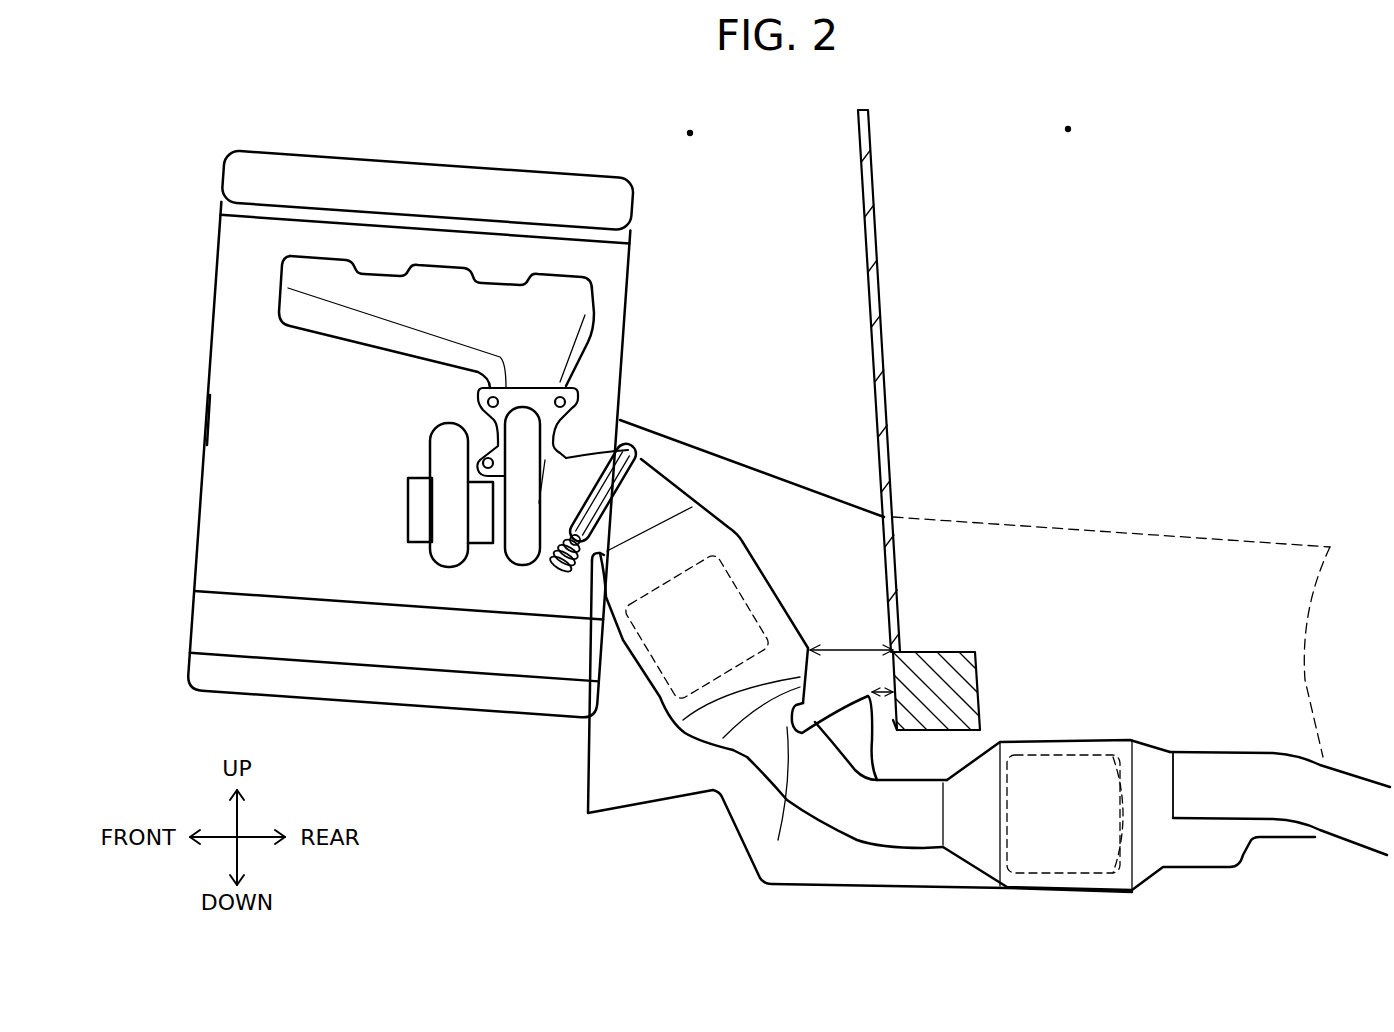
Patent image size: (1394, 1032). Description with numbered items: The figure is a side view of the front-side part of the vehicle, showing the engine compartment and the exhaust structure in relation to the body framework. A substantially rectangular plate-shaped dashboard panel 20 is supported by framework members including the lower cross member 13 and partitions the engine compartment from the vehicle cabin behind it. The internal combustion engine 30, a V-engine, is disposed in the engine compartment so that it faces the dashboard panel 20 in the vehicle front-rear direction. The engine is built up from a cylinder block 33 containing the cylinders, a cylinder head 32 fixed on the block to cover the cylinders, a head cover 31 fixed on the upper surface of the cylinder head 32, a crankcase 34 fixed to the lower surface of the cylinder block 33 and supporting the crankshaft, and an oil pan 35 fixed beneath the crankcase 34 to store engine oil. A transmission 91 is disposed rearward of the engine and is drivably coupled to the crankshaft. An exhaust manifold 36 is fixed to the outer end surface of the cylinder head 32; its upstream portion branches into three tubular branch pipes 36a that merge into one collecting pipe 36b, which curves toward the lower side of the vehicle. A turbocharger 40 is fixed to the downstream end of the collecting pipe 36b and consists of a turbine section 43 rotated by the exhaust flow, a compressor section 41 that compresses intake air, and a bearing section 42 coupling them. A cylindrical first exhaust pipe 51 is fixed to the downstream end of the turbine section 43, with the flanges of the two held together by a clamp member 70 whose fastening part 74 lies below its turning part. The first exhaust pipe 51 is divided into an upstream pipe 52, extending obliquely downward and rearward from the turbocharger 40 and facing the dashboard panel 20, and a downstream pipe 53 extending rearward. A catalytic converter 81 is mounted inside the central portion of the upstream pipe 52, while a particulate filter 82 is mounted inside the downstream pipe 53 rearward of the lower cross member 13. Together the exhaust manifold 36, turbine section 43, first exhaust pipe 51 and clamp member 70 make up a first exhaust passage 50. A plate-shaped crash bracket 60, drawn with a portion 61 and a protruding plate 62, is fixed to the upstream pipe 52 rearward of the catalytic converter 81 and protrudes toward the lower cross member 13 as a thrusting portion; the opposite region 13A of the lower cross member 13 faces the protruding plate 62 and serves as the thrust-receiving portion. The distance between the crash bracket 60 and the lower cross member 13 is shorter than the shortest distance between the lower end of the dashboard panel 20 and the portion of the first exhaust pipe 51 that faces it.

The lower cross member 13 is at (978, 663).
The opposite region 13A is at (891, 715).
The dashboard panel 20 is at (878, 200).
The internal combustion engine 30 is at (438, 158).
The head cover 31 is at (427, 196).
The cylinder head 32 is at (408, 460).
The cylinder block 33 is at (207, 420).
The crankcase 34 is at (398, 605).
The oil pan 35 is at (394, 667).
The exhaust manifold 36 is at (283, 270).
The branch pipes 36a is at (316, 257).
The collecting pipe 36b is at (400, 355).
The turbocharger 40 is at (407, 748).
The compressor section 41 is at (440, 568).
The bearing section 42 is at (482, 545).
The turbine section 43 is at (522, 566).
The first exhaust passage 50 is at (318, 489).
The first exhaust pipe 51 is at (1200, 752).
The upstream pipe 52 is at (767, 773).
The downstream pipe 53 is at (920, 853).
The crash bracket 60 is at (840, 785).
The first pipe portion 61 is at (790, 730).
The protruding plate 62 is at (870, 757).
The clamp member 70 is at (632, 452).
The fastening part 74 is at (574, 572).
The catalytic converter 81 is at (722, 537).
The particulate filter 82 is at (1073, 752).
The transmission 91 is at (712, 455).